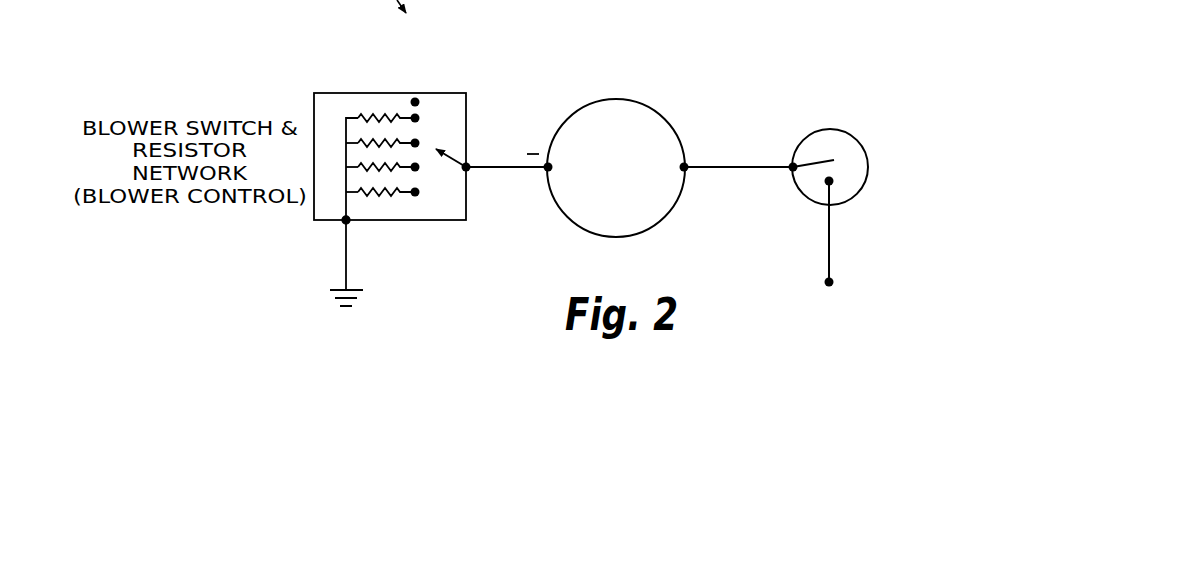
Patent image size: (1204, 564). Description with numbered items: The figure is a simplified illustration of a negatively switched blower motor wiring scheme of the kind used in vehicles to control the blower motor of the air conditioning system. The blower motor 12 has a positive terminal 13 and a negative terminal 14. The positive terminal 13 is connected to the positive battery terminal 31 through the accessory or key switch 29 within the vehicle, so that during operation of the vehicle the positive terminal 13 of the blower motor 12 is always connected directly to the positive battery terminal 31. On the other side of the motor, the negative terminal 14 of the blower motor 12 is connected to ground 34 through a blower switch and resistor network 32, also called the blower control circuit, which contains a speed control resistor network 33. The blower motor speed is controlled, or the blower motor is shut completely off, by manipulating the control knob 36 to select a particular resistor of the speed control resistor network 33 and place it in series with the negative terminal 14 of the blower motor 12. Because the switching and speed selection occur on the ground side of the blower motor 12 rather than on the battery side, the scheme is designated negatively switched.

The blower motor 12 is at (645, 102).
The positive terminal 13 is at (685, 171).
The negative terminal 14 is at (547, 171).
The accessory or key switch 29 is at (842, 128).
The positive battery terminal 31 is at (827, 279).
The blower switch and resistor network 32 is at (418, 88).
The speed control resistor network 33 is at (372, 103).
The ground 34 is at (358, 286).
The control knob 36 is at (457, 147).